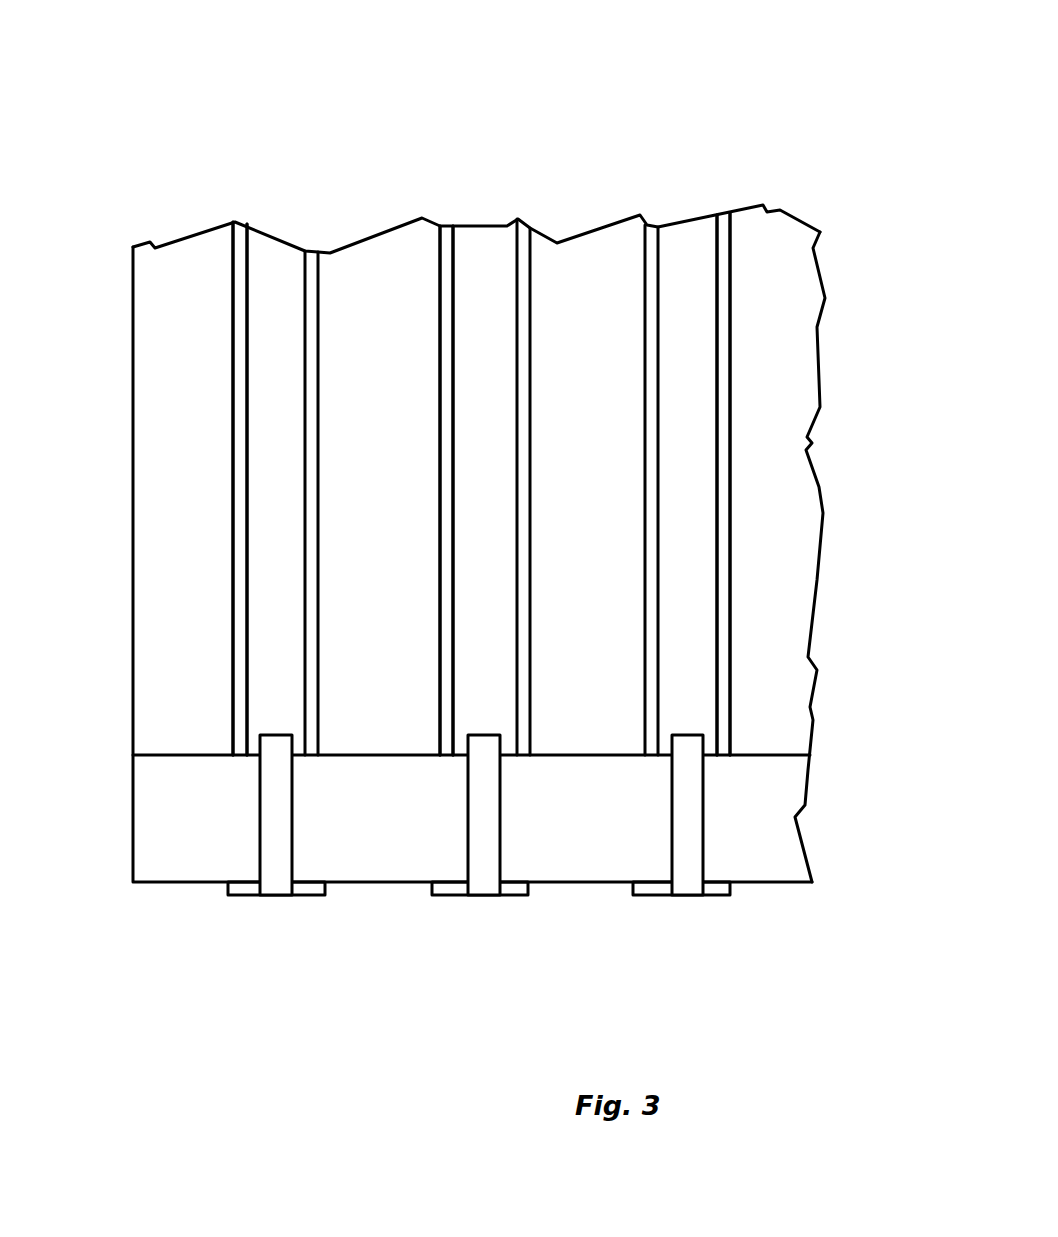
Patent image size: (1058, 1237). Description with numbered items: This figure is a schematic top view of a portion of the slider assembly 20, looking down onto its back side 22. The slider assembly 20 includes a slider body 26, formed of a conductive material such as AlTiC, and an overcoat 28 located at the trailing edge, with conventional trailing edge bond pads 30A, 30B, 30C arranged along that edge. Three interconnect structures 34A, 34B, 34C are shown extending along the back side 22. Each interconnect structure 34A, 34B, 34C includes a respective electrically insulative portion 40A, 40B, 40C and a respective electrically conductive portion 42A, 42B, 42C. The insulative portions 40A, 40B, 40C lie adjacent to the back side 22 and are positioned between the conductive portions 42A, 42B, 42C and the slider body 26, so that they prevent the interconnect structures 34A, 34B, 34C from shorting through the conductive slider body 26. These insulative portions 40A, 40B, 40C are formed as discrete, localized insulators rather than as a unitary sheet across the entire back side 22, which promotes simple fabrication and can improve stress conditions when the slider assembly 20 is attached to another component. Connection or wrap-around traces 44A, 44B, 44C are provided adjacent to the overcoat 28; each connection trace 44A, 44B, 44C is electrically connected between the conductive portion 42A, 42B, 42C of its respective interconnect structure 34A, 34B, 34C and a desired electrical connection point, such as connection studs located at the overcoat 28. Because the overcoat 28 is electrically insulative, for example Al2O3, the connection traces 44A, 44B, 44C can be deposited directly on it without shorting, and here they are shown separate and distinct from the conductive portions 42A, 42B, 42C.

The slider assembly 20 is at (593, 145).
The back side 22 is at (178, 258).
The slider body 26 is at (175, 618).
The overcoat portion 28 is at (173, 817).
The trailing edge bond pad 30A is at (243, 888).
The trailing edge bond pad 30B is at (448, 887).
The trailing edge bond pad 30C is at (652, 885).
The interconnect structure 34A is at (272, 238).
The interconnect structure 34B is at (490, 243).
The interconnect structure 34C is at (708, 343).
The electrically insulative portion 40A is at (233, 305).
The electrically insulative portion 40B is at (437, 292).
The electrically insulative portion 40C is at (730, 558).
The electrically conductive portion 42A is at (270, 418).
The electrically conductive portion 42B is at (478, 273).
The electrically conductive portion 42C is at (680, 653).
The connection trace 44A is at (283, 853).
The connection trace 44B is at (488, 853).
The connection trace 44C is at (688, 840).